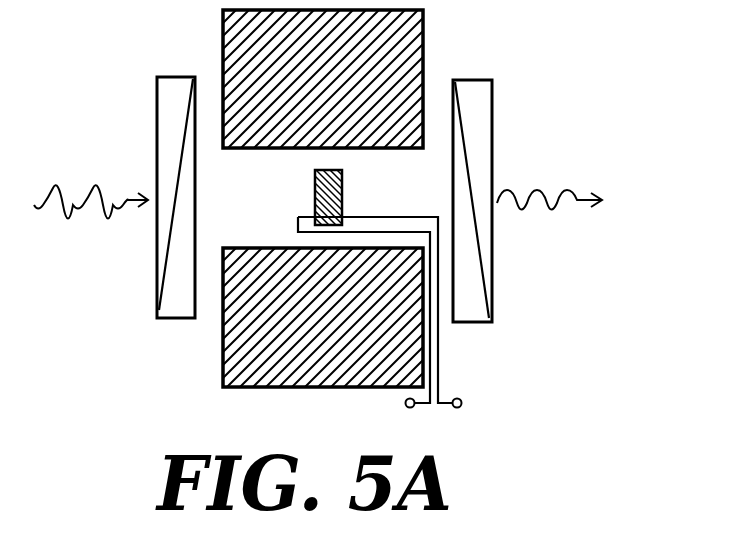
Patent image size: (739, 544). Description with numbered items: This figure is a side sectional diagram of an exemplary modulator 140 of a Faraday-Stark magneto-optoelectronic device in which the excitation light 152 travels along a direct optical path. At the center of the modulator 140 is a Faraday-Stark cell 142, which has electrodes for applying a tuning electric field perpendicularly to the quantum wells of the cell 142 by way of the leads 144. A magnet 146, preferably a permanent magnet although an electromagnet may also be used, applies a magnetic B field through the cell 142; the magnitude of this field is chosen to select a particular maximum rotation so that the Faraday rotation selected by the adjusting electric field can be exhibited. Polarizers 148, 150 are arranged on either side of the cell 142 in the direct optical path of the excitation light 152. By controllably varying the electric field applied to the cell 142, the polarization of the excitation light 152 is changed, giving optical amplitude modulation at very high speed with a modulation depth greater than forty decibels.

The modulator 140 is at (157, 333).
The Faraday-Stark cell 142 is at (342, 183).
The leads 144 is at (438, 391).
The magnet 146 is at (423, 33).
The polarizer 148 is at (175, 77).
The polarizer 150 is at (492, 118).
The excitation light 152 is at (76, 192).